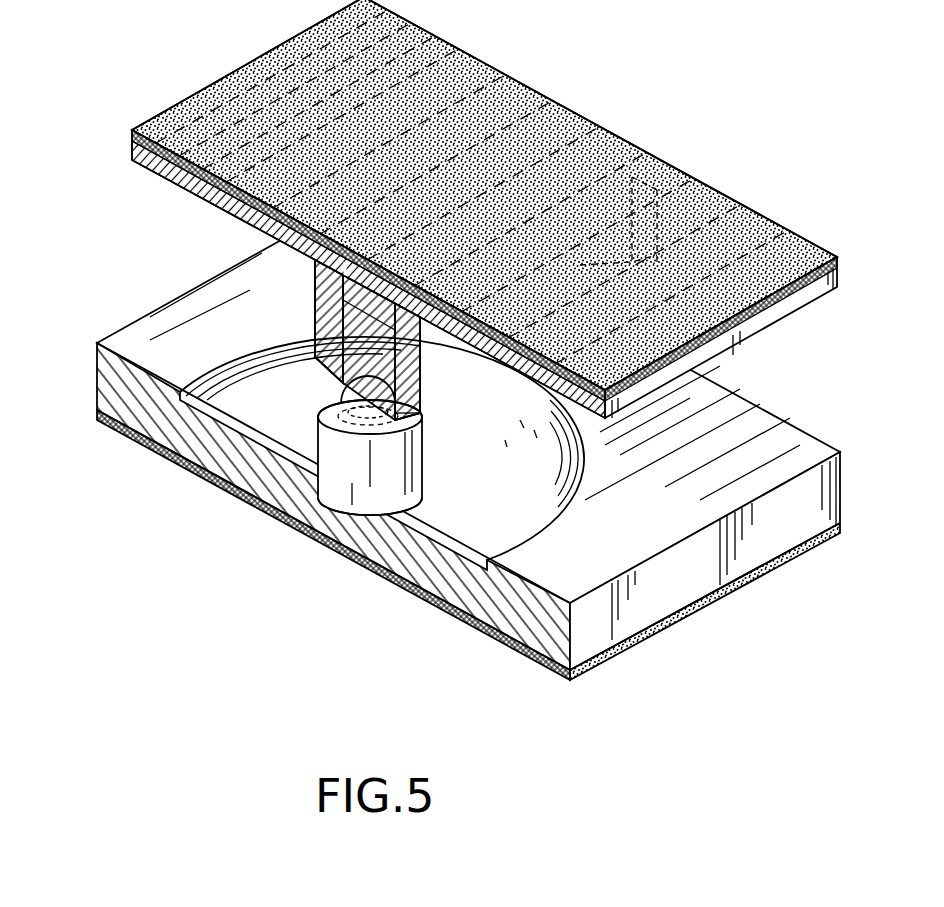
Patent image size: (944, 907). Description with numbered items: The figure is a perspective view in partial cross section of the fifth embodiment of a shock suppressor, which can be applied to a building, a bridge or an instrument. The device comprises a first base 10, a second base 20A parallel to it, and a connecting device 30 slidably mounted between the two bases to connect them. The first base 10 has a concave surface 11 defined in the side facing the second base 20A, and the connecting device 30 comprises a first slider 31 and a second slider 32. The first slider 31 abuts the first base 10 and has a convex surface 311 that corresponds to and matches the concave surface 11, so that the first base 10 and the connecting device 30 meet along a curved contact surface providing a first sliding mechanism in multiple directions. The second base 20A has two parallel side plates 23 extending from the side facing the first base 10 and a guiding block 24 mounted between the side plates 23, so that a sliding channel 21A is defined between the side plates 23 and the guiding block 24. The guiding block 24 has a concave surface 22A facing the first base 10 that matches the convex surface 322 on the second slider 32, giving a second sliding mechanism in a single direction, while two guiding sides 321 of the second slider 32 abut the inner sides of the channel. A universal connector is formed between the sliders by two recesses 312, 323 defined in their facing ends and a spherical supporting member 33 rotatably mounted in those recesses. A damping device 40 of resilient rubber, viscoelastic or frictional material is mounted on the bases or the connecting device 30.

The first base 10 is at (93, 372).
The concave surface 11 is at (558, 495).
The second base 20A is at (126, 144).
The sliding channel 21A is at (470, 313).
The concave surface 22A is at (662, 247).
The side plates 23 is at (330, 278).
The guiding block 24 is at (352, 288).
The connecting device 30 is at (350, 520).
The first slider 31 is at (332, 460).
The convex surface 311 is at (403, 513).
The recess 312 is at (340, 418).
The second slider 32 is at (357, 343).
The guiding sides 321 is at (395, 413).
The convex surface 322 is at (377, 313).
The recess 323 is at (405, 452).
The supporting member 33 is at (352, 405).
The damping device 40 is at (213, 72).